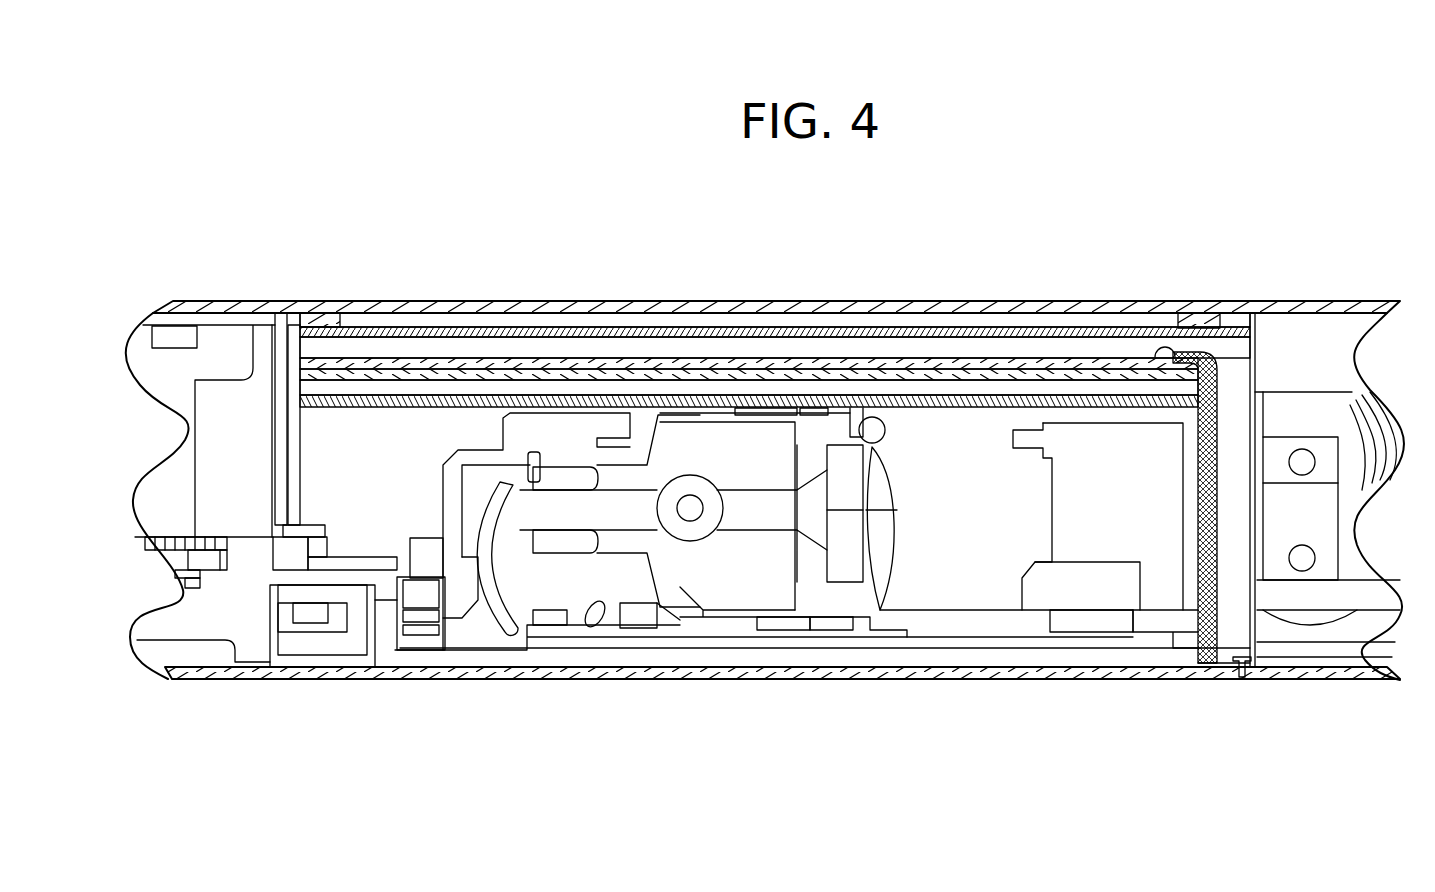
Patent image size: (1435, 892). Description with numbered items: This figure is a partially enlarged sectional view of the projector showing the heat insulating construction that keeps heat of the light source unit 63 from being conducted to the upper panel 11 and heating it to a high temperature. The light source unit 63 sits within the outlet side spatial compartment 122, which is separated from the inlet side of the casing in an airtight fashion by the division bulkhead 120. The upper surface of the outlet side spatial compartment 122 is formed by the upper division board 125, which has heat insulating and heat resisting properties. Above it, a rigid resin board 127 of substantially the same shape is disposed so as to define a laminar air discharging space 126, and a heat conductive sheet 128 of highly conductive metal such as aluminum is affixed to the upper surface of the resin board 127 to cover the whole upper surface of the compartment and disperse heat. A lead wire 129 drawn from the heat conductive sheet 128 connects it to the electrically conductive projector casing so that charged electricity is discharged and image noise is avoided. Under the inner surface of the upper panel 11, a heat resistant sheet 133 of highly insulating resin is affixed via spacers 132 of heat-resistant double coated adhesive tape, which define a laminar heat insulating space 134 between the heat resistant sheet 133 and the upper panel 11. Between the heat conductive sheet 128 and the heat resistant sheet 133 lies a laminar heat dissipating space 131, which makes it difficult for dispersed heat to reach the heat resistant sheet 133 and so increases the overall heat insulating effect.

The upper panel 11 is at (1290, 312).
The light source unit 63 is at (750, 592).
The division bulkhead 120 is at (283, 480).
The outlet side spatial compartment 122 is at (967, 590).
The upper division board 125 is at (377, 407).
The laminar air discharging space 126 is at (466, 385).
The resin board 127 is at (557, 373).
The heat conductive sheet 128 is at (655, 360).
The lead wire 129 is at (1196, 665).
The laminar heat dissipating space 131 is at (752, 347).
The spacers 132 is at (320, 325).
The heat resistant sheet 133 is at (876, 332).
The laminar heat insulating space 134 is at (975, 322).